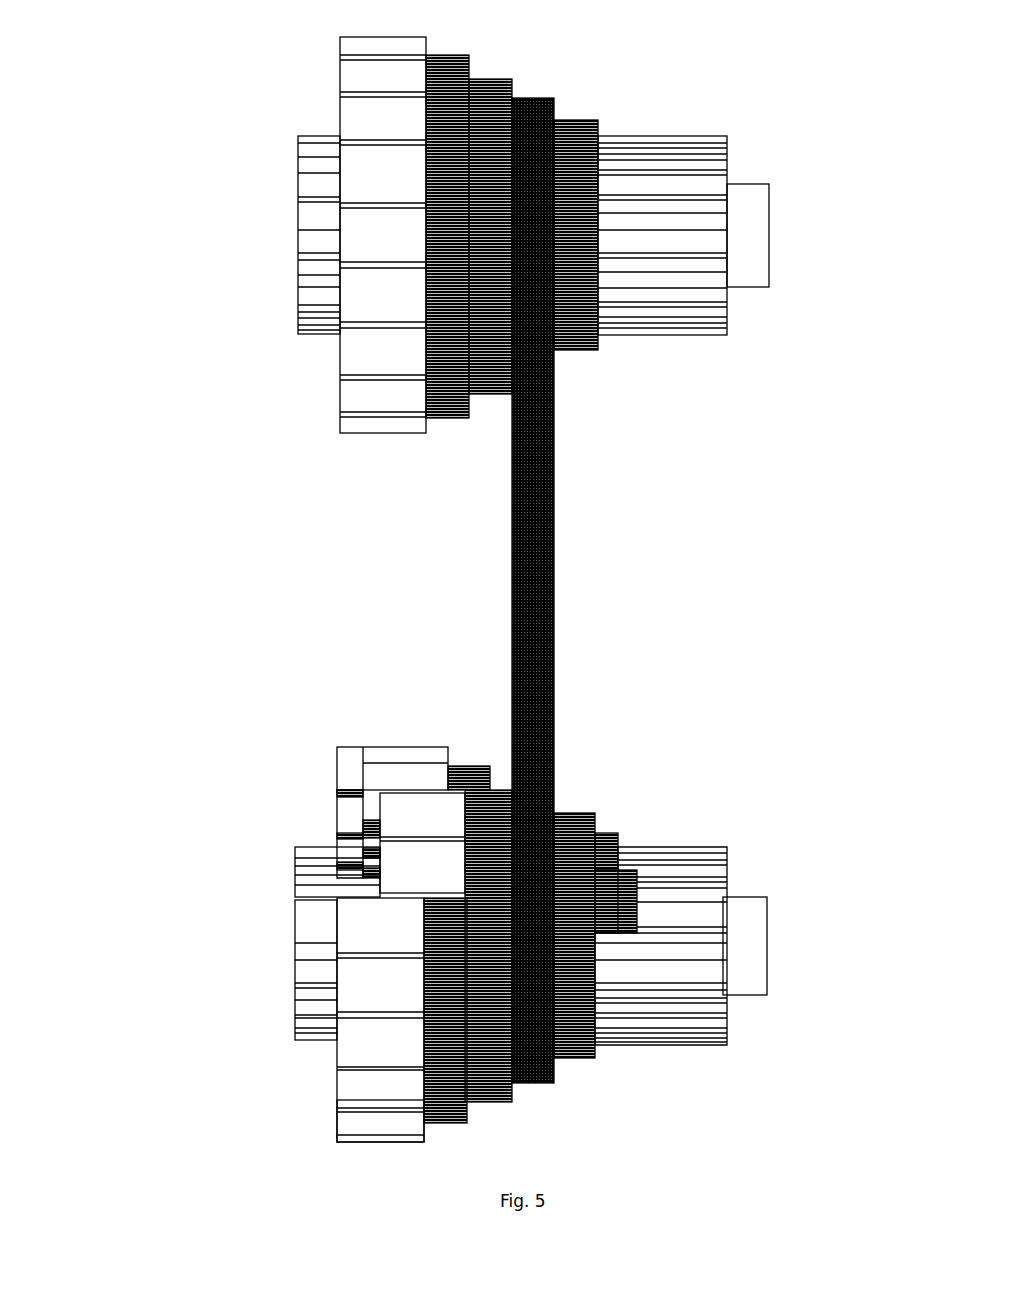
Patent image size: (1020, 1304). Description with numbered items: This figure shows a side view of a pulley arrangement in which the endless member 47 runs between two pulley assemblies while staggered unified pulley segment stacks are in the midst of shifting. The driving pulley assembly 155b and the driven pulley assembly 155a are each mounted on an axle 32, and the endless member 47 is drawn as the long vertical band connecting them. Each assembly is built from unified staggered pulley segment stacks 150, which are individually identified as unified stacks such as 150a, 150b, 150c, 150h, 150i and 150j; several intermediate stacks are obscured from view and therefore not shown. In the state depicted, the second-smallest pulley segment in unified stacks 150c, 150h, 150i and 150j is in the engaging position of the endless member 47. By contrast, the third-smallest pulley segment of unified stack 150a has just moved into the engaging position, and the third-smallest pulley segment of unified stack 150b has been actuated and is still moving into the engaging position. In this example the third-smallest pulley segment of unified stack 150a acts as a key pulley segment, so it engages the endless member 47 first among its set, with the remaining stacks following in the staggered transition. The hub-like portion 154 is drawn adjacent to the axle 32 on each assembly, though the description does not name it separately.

The unified staggered pulley segment stacks 150 is at (340, 45).
The unified stack 150a is at (295, 866).
The unified stack 150b is at (337, 810).
The unified stack 150c is at (337, 770).
The unified stack 150h is at (337, 1122).
The unified stack 150i is at (337, 1048).
The unified stack 150j is at (295, 922).
The gear hub 154 is at (668, 137).
The axle 32 is at (755, 237).
The endless member 47 is at (508, 497).
The driven pulley assembly 155a is at (312, 468).
The driving pulley assembly 155b is at (652, 780).